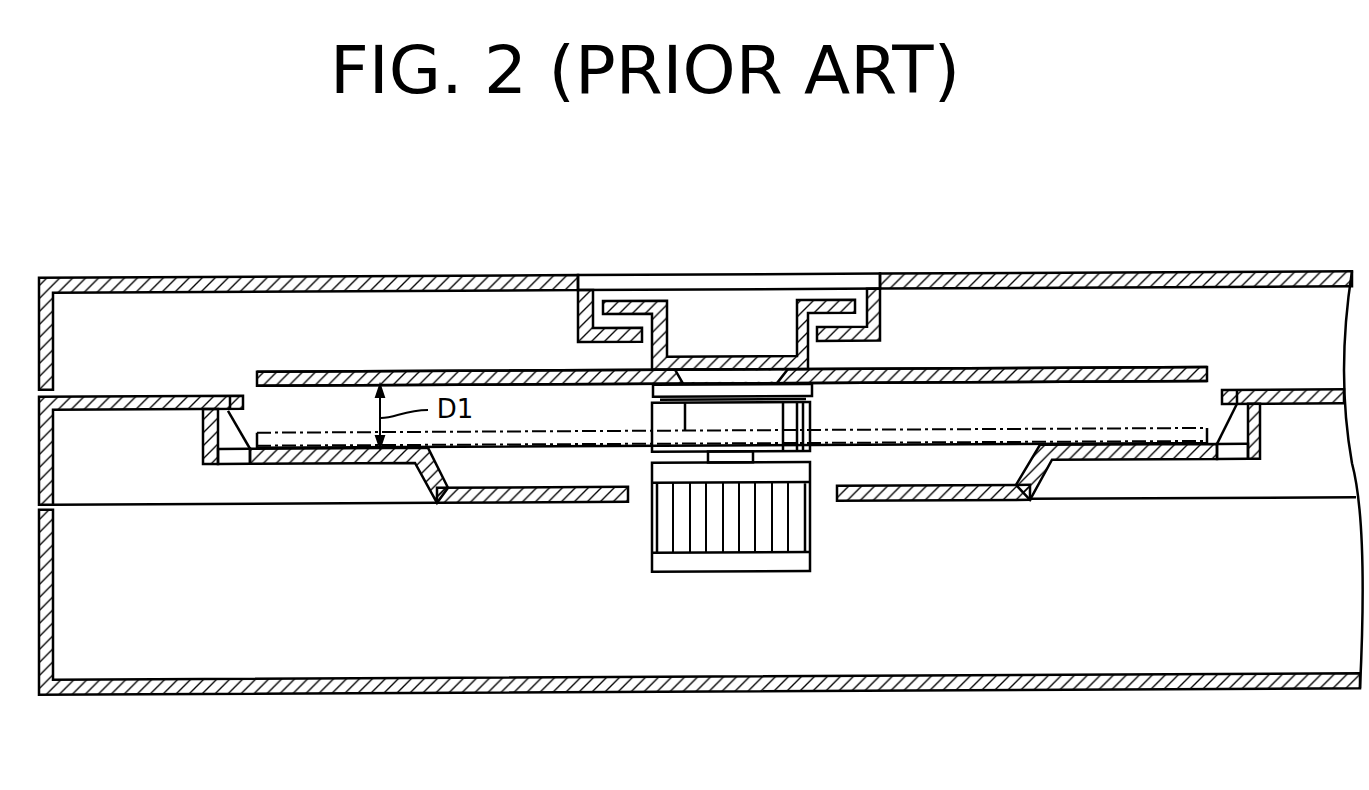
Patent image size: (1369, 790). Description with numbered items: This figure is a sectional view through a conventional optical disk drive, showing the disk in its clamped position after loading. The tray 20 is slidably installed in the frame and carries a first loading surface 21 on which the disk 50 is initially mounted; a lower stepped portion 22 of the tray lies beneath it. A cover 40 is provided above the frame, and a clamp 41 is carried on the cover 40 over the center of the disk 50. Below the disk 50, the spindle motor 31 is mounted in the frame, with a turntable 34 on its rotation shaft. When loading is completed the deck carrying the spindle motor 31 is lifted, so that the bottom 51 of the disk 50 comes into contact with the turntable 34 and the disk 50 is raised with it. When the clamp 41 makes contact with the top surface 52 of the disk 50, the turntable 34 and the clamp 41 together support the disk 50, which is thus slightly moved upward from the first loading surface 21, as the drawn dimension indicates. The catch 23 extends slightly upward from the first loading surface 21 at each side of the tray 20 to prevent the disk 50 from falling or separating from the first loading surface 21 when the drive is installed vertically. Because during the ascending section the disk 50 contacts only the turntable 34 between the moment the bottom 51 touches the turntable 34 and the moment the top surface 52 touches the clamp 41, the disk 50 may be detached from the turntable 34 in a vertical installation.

The tray 20 is at (187, 411).
The first loading surface 21 is at (357, 463).
The second bottom plate of tray 22 is at (560, 502).
The catch 23 is at (240, 395).
The spindle motor 31 is at (807, 563).
The turntable 34 is at (803, 417).
The cover 40 is at (450, 277).
The clamp 41 is at (829, 300).
The disk 50 is at (1097, 357).
The bottom 51 is at (962, 383).
The top surface 52 is at (947, 368).